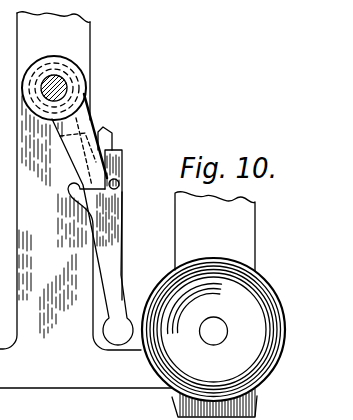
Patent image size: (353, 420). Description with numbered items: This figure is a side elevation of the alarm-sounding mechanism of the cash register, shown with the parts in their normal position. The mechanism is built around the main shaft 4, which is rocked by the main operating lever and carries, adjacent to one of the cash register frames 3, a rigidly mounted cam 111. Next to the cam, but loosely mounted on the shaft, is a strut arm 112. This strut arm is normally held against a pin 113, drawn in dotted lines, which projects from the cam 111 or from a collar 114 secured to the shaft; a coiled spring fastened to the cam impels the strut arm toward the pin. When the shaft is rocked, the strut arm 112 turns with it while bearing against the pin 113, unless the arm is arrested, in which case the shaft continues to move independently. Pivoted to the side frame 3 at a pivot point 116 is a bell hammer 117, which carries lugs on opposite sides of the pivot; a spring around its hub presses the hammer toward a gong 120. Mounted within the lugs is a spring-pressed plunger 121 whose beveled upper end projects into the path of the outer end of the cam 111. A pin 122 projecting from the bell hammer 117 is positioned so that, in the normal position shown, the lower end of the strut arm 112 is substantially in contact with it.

The cash register frame 3 is at (27, 386).
The main shaft 4 is at (52, 82).
The cam 111 is at (96, 117).
The strut arm 112 is at (80, 155).
The pin 113 is at (84, 63).
The collar 114 is at (58, 60).
The pivot point 116 is at (72, 192).
The bell hammer 117 is at (116, 218).
The gong 120 is at (262, 351).
The plunger 121 is at (112, 134).
The pin 122 is at (120, 184).